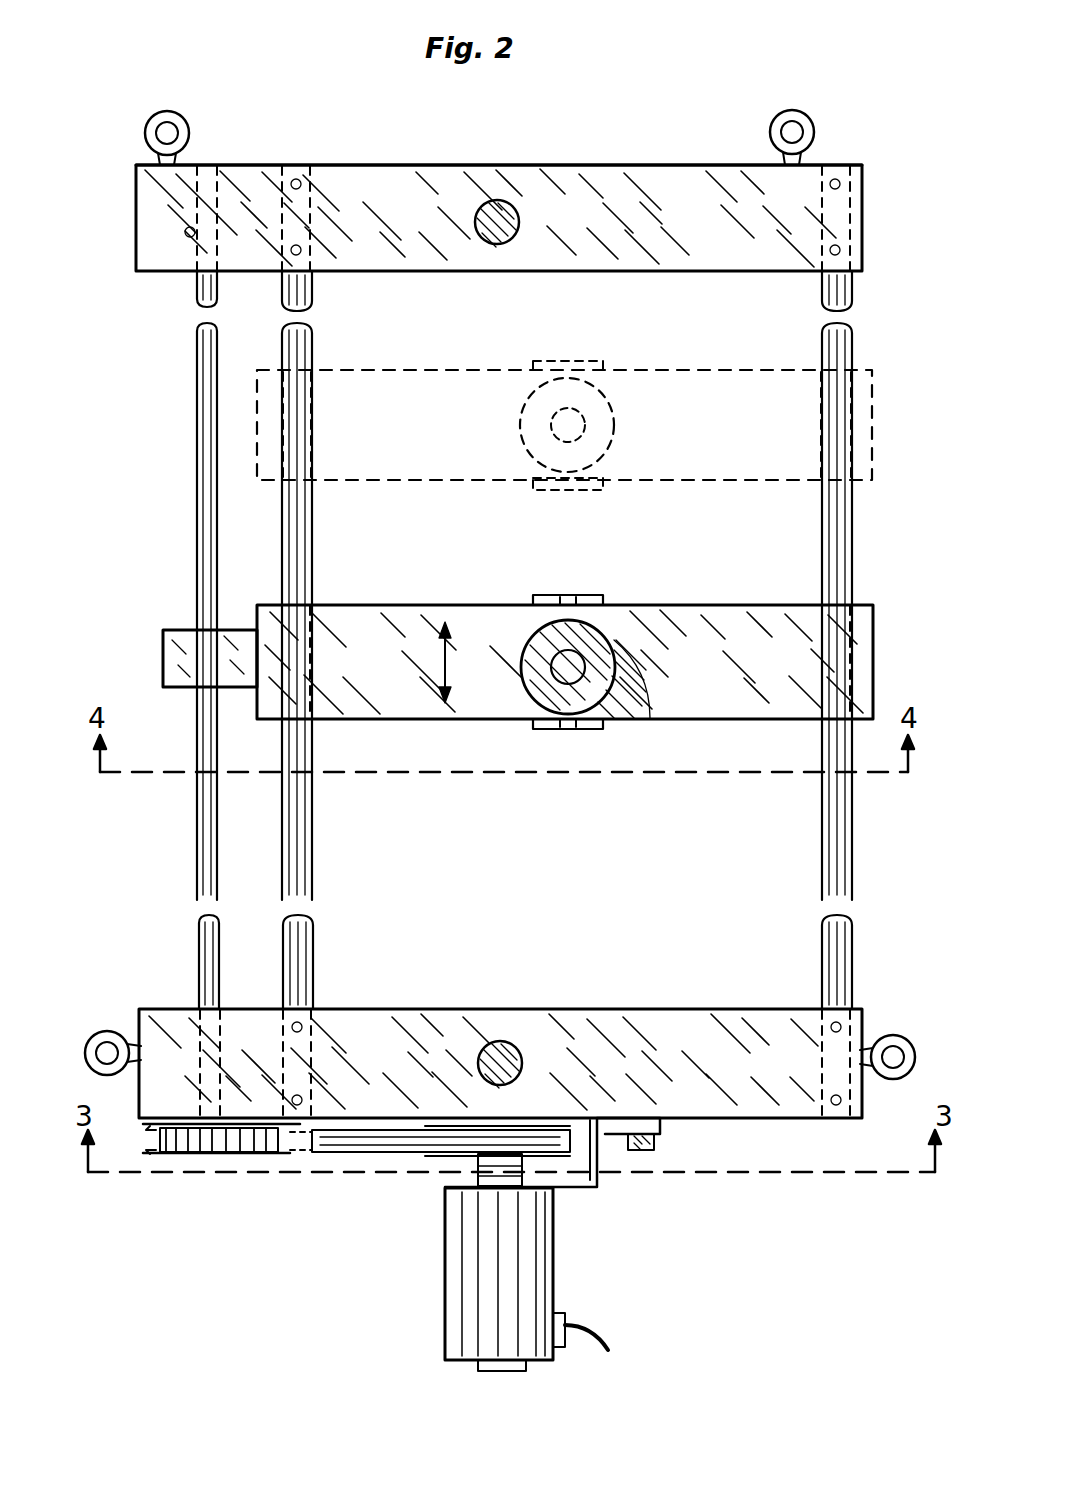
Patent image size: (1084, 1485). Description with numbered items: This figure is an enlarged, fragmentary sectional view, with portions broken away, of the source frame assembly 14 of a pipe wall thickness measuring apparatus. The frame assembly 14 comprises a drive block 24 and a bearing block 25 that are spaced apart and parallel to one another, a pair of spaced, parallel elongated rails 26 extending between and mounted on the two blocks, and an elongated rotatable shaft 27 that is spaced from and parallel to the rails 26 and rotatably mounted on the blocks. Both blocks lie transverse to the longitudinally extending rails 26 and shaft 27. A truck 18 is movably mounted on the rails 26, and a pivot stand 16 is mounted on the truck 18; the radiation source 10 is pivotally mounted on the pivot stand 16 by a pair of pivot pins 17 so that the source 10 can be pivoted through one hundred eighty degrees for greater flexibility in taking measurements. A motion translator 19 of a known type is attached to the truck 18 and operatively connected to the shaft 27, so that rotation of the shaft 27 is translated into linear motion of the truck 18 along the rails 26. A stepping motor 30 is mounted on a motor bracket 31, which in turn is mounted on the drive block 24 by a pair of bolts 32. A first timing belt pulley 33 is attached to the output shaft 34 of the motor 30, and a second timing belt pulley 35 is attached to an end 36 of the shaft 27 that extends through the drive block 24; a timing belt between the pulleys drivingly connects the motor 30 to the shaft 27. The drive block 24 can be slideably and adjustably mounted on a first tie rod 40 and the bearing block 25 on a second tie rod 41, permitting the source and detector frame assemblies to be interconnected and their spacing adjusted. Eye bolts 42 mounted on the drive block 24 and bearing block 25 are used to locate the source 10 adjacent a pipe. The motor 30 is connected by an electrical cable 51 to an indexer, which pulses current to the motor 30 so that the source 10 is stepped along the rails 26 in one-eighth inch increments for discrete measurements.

The source 10 is at (612, 395).
The frame assembly 14 is at (660, 165).
The pivot stand 16 is at (562, 370).
The pivot pins 17 is at (552, 495).
The truck 18 is at (410, 460).
The motion translator 19 is at (165, 650).
The drive block 24 is at (765, 1098).
The bearing block 25 is at (530, 185).
The rails 26 is at (312, 342).
The shaft 27 is at (197, 342).
The stepping motor 30 is at (445, 1297).
The motor bracket 31 is at (603, 1182).
The bolts 32 is at (655, 1142).
The first timing belt pulley 33 is at (432, 1160).
The output shaft 34 is at (480, 1188).
The second timing belt pulley 35 is at (212, 1158).
The end of shaft 36 is at (122, 1122).
The first tie rod 40 is at (505, 1043).
The second tie rod 41 is at (480, 205).
The eye bolts 42 is at (185, 112).
The electrical cable 51 is at (606, 1352).